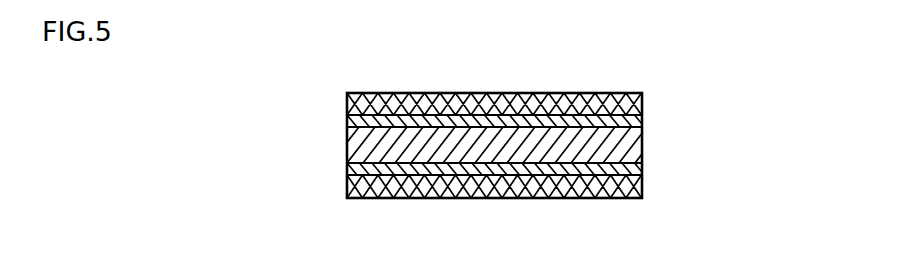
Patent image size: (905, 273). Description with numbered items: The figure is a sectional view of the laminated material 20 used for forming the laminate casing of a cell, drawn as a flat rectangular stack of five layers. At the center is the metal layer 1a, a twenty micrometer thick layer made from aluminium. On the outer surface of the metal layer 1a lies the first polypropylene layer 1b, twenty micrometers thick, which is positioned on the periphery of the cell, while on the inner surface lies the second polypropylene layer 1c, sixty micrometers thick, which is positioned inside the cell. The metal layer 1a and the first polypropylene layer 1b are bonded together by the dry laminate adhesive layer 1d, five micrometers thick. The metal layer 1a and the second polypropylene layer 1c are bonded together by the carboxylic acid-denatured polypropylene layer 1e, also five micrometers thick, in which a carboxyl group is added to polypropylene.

The laminated material 20 is at (493, 151).
The metal layer 1a is at (354, 136).
The first polypropylene layer 1b is at (397, 95).
The second polypropylene layer 1c is at (418, 188).
The dry laminate adhesive layer 1d is at (491, 107).
The carboxylic acid-denatured polypropylene layer 1e is at (505, 176).